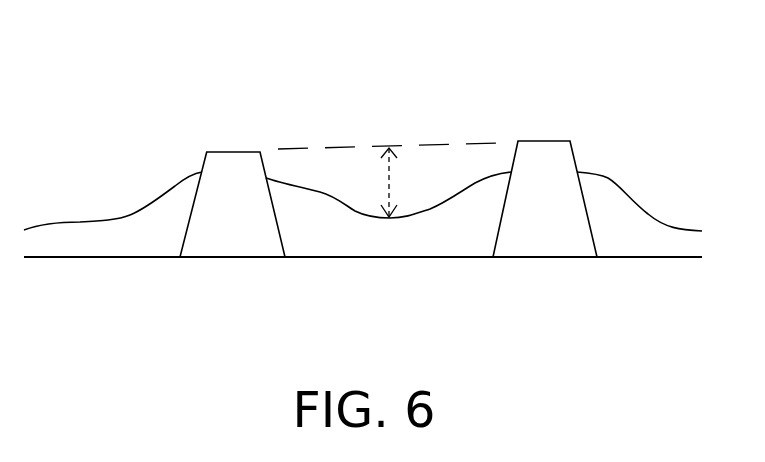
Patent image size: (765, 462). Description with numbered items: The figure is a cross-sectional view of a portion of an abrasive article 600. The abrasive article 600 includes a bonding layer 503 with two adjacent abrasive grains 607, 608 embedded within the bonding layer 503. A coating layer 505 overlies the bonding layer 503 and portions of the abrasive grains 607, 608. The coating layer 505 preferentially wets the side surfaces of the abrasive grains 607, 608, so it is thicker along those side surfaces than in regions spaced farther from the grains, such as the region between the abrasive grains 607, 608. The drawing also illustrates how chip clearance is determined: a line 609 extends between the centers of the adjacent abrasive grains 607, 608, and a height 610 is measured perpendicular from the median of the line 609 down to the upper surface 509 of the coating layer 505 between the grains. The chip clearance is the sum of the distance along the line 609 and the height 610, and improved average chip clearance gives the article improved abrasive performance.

The abrasive article 600 is at (44, 36).
The bonding layer 503 is at (363, 287).
The coating layer 505 is at (608, 205).
The upper surface 509 is at (303, 178).
The abrasive grain 607 is at (233, 243).
The abrasive grain 608 is at (545, 243).
The line 609 is at (350, 148).
The height 610 is at (394, 163).